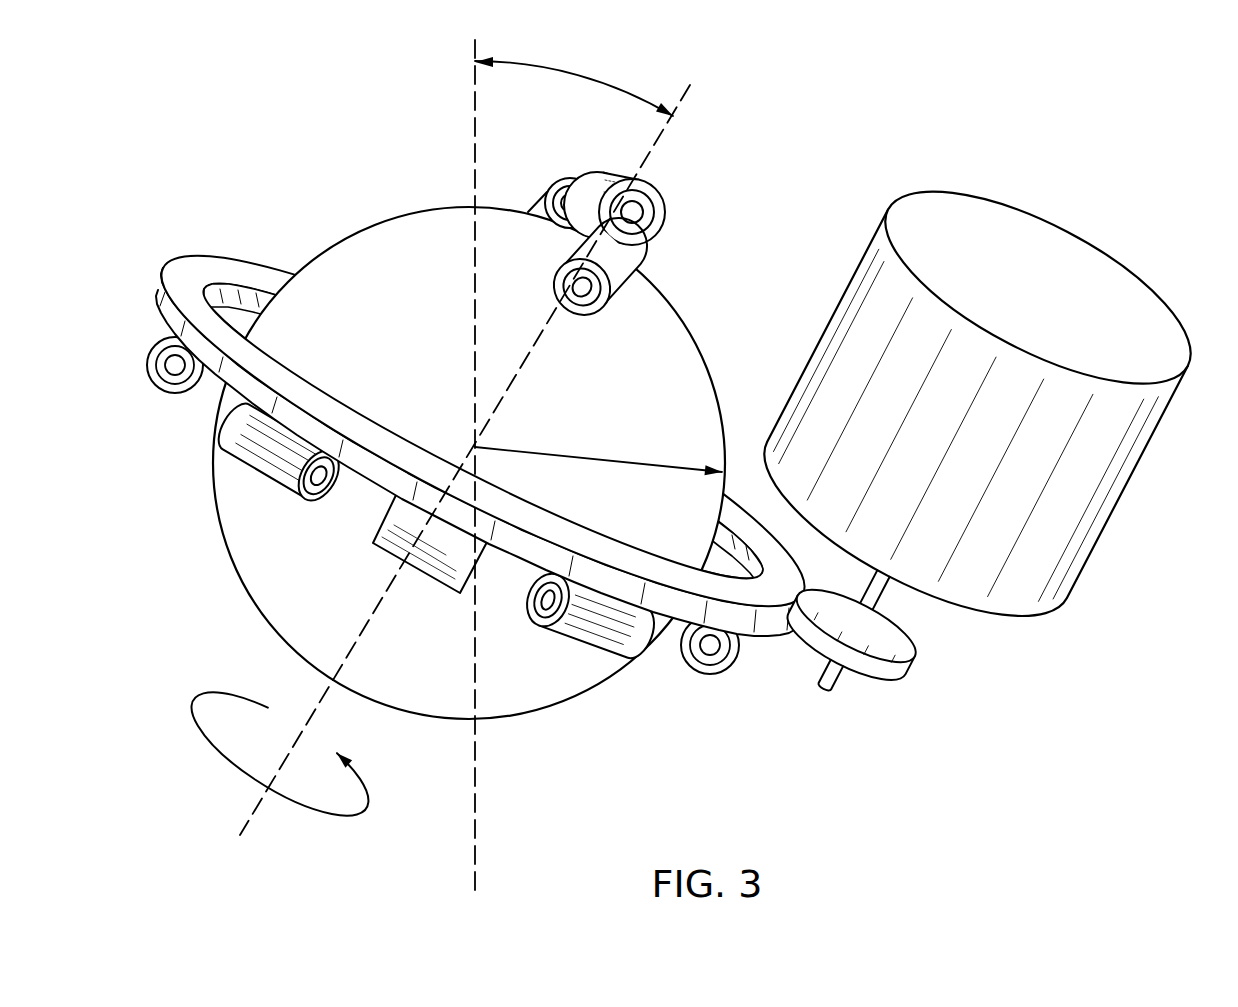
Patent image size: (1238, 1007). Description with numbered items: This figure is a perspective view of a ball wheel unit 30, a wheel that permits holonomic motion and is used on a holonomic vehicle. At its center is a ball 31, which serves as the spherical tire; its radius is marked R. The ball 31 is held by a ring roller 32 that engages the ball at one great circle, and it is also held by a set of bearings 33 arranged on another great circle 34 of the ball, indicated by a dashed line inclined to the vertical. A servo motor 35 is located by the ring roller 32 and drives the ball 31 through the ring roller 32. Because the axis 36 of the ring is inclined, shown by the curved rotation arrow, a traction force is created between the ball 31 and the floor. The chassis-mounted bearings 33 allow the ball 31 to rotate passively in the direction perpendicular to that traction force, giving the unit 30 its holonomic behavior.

The ball wheel unit 30 is at (401, 805).
The ball 31 is at (341, 358).
The ring roller 32 is at (763, 636).
The bearings 33 is at (662, 199).
The great circle 34 is at (525, 362).
The servo motor 35 is at (1047, 244).
The axis of the ring 36 is at (257, 809).
The radius of the spherical tire R is at (598, 453).